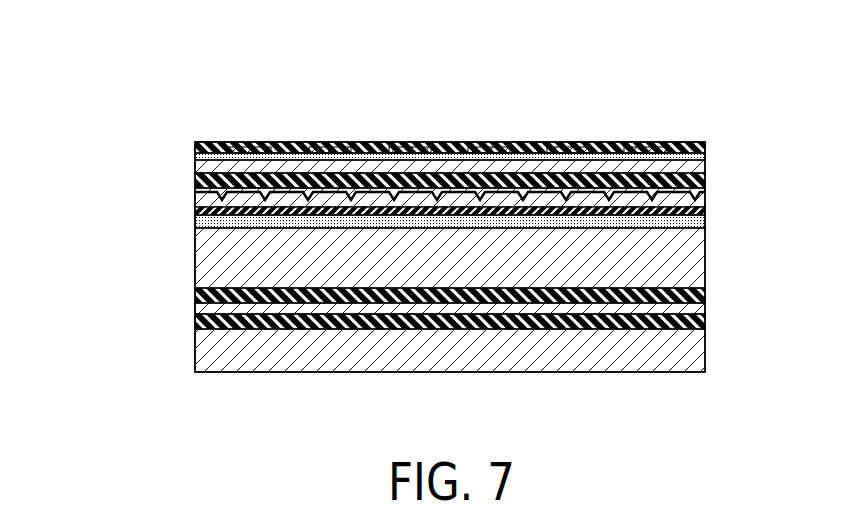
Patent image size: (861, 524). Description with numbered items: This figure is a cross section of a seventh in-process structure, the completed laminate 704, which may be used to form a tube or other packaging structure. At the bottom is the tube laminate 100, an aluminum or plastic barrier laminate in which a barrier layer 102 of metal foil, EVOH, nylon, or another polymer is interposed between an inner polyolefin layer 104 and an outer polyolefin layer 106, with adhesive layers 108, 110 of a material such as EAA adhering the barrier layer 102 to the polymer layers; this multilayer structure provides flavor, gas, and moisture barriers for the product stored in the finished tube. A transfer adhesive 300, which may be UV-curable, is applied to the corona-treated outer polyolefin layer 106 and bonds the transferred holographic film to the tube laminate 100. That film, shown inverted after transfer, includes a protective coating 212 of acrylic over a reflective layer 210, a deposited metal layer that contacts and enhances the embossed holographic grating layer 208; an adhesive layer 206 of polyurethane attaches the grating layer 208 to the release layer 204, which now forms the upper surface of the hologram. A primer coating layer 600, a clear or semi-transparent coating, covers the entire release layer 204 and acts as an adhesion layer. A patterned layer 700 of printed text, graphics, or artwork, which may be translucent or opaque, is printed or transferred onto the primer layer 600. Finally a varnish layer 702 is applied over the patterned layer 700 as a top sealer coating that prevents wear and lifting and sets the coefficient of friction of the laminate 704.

The laminate 704 is at (82, 72).
The primer coating layer 600 is at (195, 157).
The transfer adhesive 300 is at (195, 222).
The tube laminate 100 is at (182, 228).
The patterned layer 700 is at (325, 143).
The varnish layer 702 is at (450, 143).
The release layer 204 is at (706, 165).
The adhesive layer 206 is at (706, 178).
The holographic grating layer 208 is at (706, 188).
The reflective layer 210 is at (706, 197).
The protective coating 212 is at (706, 210).
The outer polyolefin layer 106 is at (706, 262).
The adhesive layer 108 is at (706, 300).
The barrier layer 102 is at (706, 308).
The adhesive layer 110 is at (706, 322).
The inner polyolefin layer 104 is at (706, 355).